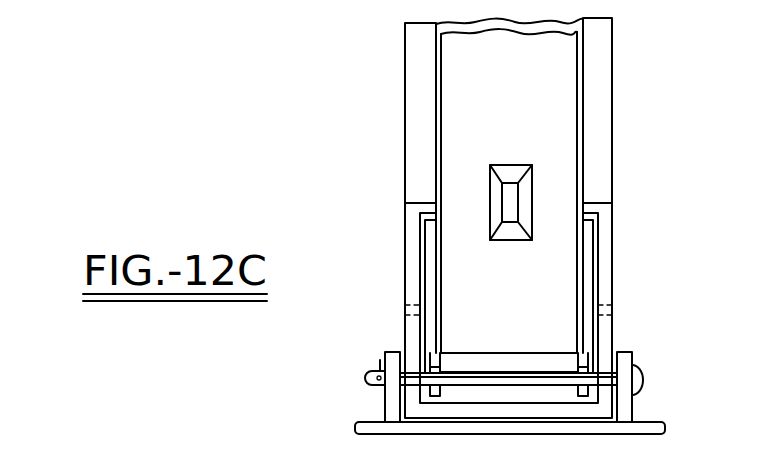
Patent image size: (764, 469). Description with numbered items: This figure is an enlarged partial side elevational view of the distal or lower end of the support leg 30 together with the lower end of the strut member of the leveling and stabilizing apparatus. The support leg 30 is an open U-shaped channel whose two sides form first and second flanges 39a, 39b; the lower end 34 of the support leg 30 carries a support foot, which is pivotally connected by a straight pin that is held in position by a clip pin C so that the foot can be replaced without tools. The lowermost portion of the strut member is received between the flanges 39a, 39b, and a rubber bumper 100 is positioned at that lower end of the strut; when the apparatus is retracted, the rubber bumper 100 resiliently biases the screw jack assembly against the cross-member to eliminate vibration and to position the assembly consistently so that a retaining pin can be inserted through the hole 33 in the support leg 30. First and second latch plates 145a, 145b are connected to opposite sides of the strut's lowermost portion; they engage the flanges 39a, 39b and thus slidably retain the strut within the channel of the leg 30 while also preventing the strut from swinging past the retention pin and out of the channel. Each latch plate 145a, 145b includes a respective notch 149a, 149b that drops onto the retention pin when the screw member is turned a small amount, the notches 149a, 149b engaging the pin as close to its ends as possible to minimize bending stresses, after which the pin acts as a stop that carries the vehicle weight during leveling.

The support leg 30 is at (617, 96).
The first flange 39a is at (421, 202).
The second flange 39b is at (590, 203).
The rubber bumper 100 is at (492, 198).
The first latch plate 145a is at (428, 247).
The second latch plate 145b is at (587, 250).
The hole 33 is at (403, 306).
The lower end of support leg 34 is at (613, 294).
The first notch 149a is at (436, 368).
The second notch 149b is at (586, 362).
The clip pin C is at (380, 362).